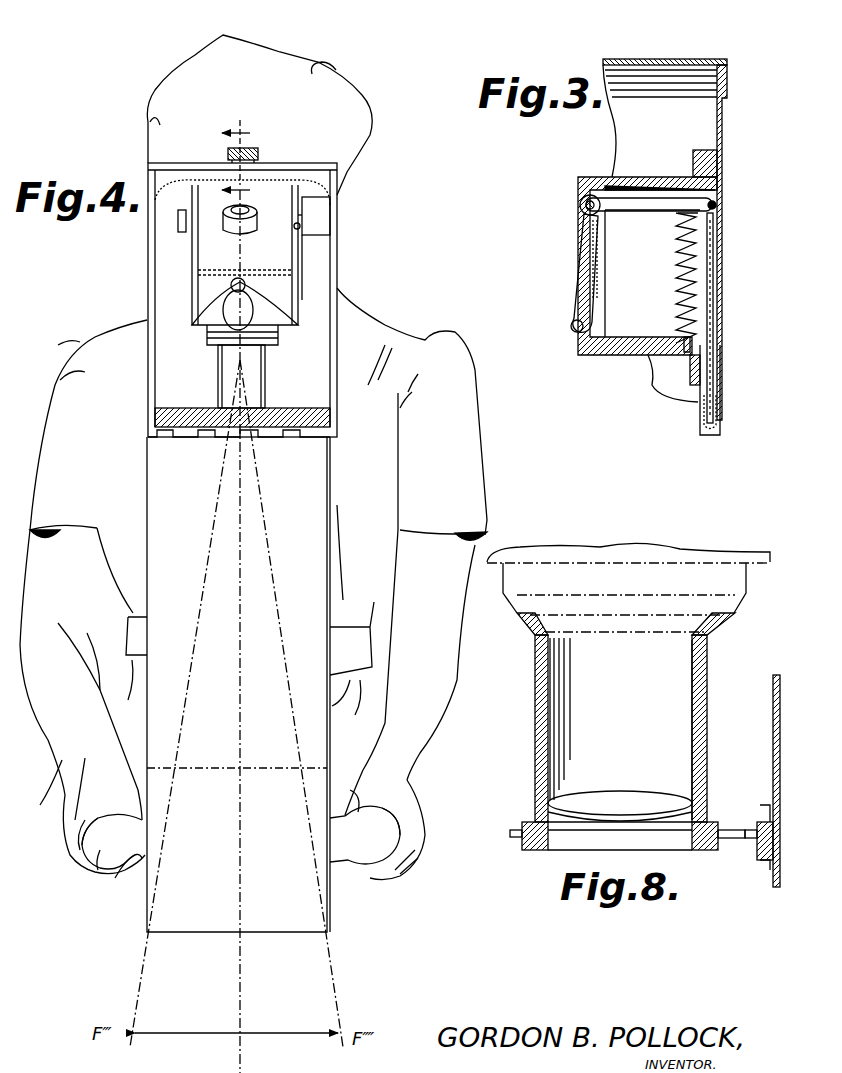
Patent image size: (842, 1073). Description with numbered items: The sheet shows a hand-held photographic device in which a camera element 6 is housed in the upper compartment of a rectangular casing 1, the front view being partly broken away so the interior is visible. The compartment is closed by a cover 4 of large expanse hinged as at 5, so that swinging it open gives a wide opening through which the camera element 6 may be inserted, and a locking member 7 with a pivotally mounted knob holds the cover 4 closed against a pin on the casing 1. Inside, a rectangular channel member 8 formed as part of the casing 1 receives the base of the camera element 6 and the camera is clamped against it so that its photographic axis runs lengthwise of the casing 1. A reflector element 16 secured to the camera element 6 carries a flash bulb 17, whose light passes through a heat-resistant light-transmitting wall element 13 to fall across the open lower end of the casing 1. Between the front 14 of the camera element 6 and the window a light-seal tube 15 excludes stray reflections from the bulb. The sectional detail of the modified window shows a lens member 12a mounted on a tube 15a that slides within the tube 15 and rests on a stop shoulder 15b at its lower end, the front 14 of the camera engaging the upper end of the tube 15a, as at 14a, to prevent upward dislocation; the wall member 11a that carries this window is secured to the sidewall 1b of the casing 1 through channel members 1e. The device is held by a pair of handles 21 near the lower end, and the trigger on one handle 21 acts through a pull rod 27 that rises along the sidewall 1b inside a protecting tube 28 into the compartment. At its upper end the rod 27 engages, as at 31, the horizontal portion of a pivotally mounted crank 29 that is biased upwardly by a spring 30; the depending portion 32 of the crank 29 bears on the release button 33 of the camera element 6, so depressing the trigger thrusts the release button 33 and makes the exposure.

In FIG. 4, the casing 1 is at (335, 506).
In FIG. 3, the sidewall 1b is at (722, 120).
In FIG. 8, the sidewall 1b is at (773, 725).
In FIG. 8, the channel members 1e is at (765, 823).
In FIG. 4, the cover 4 is at (148, 295).
In FIG. 3, the cover 4 is at (712, 59).
In FIG. 4, the hinge 5 is at (195, 460).
In FIG. 4, the camera element 6 is at (240, 235).
In FIG. 8, the camera element 6 is at (662, 548).
In FIG. 4, the locking member 7 is at (258, 152).
In FIG. 4, the rectangular channel member 8 is at (192, 260).
In FIG. 8, the wall member 11a is at (515, 835).
In FIG. 8, the lens member 12a is at (640, 790).
In FIG. 4, the light-transmitting wall element 13 is at (275, 420).
In FIG. 8, the front of the camera 14 is at (733, 612).
In FIG. 8, the engagement of tube by camera front 14a is at (572, 640).
In FIG. 4, the light-seal tube 15 is at (267, 382).
In FIG. 8, the light-seal tube 15 is at (708, 680).
In FIG. 8, the tube 15a is at (690, 720).
In FIG. 8, the stop shoulder 15b is at (535, 812).
In FIG. 4, the reflector element 16 is at (290, 320).
In FIG. 4, the flash bulb 17 is at (230, 320).
In FIG. 4, the handles 21 is at (95, 855).
In FIG. 3, the pull rod 27 is at (710, 272).
In FIG. 4, the protecting tube 28 is at (312, 272).
In FIG. 3, the protecting tube 28 is at (718, 425).
In FIG. 3, the crank 29 is at (663, 210).
In FIG. 3, the spring 30 is at (676, 263).
In FIG. 3, the engagement point 31 is at (716, 205).
In FIG. 4, the depending portion 32 is at (300, 226).
In FIG. 3, the depending portion 32 is at (571, 328).
In FIG. 4, the release button 33 is at (298, 218).